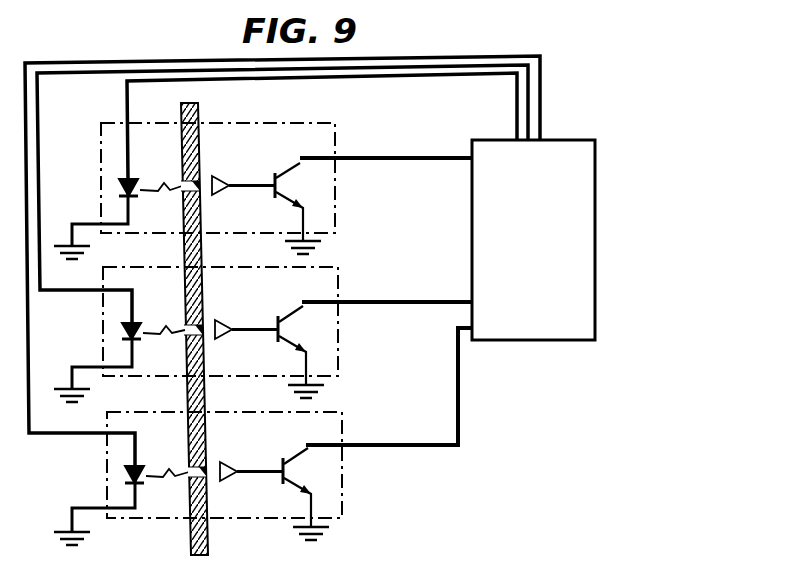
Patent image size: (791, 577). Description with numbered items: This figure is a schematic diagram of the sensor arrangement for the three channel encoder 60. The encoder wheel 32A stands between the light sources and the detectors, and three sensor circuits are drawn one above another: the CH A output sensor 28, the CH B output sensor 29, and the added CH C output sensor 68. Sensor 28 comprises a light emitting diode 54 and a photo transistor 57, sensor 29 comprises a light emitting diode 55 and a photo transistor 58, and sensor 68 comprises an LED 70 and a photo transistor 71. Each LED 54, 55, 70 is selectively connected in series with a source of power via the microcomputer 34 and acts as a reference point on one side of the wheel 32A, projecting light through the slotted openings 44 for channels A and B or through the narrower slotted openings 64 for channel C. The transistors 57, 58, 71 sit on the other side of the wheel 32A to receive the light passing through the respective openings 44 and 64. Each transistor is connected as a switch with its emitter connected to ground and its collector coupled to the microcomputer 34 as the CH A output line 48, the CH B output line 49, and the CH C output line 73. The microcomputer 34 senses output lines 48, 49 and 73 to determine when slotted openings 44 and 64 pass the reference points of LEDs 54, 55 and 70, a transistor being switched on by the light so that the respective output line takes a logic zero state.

The encoder 60 is at (440, 46).
The CH A output sensor 28 is at (388, 116).
The CH B output sensor 29 is at (366, 339).
The CH C output sensor 68 is at (356, 425).
The encoder wheel 32A is at (197, 132).
The light emitting diode 54 is at (137, 182).
The light emitting diode 55 is at (141, 320).
The LED 70 is at (145, 464).
The slotted openings 44 is at (198, 186).
The slotted openings 64 is at (206, 472).
The photo transistor 57 is at (298, 163).
The photo transistor 58 is at (302, 306).
The photo transistor 71 is at (307, 448).
The CH A output line 48 is at (437, 157).
The CH B output line 49 is at (455, 300).
The CH C output line 73 is at (409, 443).
The microcomputer 34 is at (571, 280).